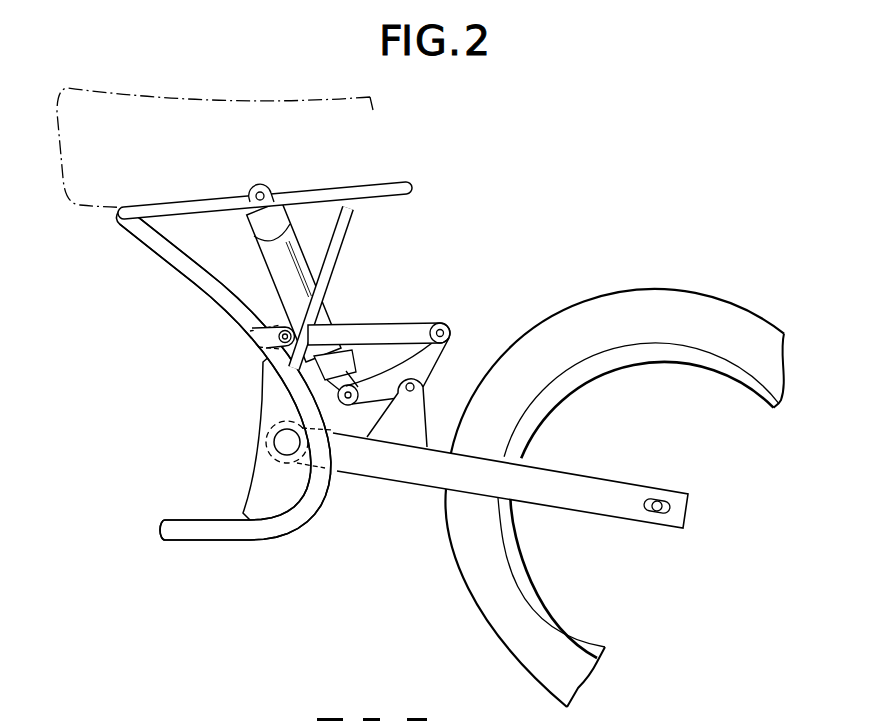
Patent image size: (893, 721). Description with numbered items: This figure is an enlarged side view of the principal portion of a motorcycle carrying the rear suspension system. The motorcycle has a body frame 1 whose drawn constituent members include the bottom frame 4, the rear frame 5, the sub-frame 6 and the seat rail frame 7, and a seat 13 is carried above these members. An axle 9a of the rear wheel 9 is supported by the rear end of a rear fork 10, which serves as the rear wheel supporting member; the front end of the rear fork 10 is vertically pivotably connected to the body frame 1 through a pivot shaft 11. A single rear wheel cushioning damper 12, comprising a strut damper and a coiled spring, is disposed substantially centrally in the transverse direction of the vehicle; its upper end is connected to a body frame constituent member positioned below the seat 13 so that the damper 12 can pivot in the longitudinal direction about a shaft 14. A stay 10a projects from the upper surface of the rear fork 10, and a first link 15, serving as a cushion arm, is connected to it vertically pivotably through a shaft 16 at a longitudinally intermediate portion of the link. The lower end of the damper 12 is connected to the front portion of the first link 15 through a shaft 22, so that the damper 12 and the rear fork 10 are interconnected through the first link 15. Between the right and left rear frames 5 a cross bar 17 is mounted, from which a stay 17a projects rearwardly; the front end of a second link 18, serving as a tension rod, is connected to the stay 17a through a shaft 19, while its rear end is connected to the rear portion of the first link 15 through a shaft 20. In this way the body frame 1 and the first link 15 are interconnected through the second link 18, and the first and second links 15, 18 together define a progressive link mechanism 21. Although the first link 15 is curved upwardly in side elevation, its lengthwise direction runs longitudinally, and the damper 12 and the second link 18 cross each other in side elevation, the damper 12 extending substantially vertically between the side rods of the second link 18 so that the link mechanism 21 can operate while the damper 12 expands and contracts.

The body frame 1 is at (223, 398).
The bottom frame 4 is at (215, 540).
The rear frame 5 is at (168, 256).
The sub-frame 6 is at (346, 232).
The seat rail frame 7 is at (390, 182).
The rear wheel 9 is at (537, 673).
The axle 9a is at (657, 514).
The rear fork 10 is at (470, 497).
The stay 10a is at (412, 434).
The pivot shaft 11 is at (287, 457).
The rear wheel cushioning damper 12 is at (265, 257).
The seat 13 is at (273, 98).
The shaft 14 is at (258, 187).
The first link 15 is at (430, 360).
The shaft 16 is at (414, 389).
The cross bar 17 is at (262, 327).
The stay 17a is at (273, 327).
The second link 18 is at (380, 323).
The shaft 19 is at (281, 343).
The shaft 20 is at (447, 325).
The progressive link mechanism 21 is at (413, 318).
The shaft 22 is at (350, 406).